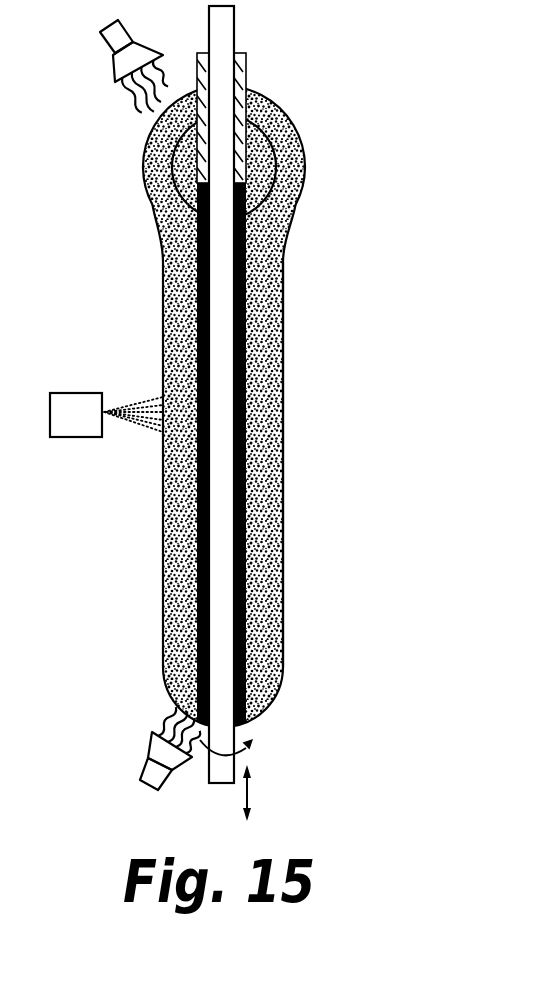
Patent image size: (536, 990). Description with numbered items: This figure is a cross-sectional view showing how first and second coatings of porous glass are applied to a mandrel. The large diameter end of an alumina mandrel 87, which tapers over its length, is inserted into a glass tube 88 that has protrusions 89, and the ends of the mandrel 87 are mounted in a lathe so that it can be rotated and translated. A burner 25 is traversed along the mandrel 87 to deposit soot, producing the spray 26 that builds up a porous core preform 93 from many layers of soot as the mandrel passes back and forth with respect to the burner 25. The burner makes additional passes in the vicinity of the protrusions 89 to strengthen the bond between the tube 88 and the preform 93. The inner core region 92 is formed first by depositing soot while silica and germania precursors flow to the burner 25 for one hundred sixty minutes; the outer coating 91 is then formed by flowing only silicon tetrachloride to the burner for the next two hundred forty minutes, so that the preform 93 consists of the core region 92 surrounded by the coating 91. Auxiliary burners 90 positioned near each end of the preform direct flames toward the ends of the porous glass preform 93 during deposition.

The burner 25 is at (73, 393).
The spray 26 is at (137, 405).
The alumina mandrel 87 is at (228, 23).
The glass tube 88 is at (246, 73).
The protrusions 89 is at (247, 157).
The auxiliary burners 90 is at (107, 49).
The coating 91 is at (178, 494).
The core region 92 is at (204, 551).
The porous core preform 93 is at (294, 552).